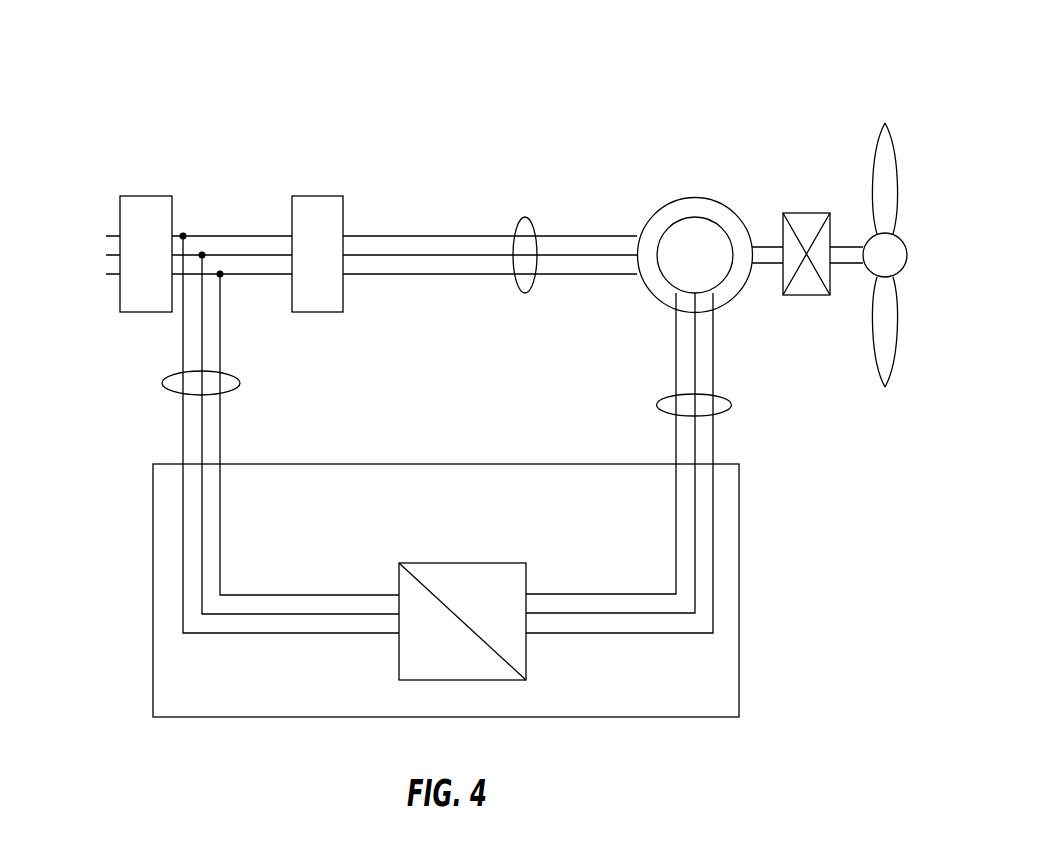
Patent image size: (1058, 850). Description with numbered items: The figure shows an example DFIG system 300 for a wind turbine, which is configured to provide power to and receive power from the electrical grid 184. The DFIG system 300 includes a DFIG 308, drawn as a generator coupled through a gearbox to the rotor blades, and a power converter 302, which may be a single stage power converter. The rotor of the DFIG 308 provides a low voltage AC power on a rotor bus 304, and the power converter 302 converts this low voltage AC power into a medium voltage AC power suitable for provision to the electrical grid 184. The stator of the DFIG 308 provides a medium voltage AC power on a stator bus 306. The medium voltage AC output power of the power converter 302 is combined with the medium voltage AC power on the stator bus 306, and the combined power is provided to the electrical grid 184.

The DFIG system 300 is at (753, 64).
The electrical grid 184 is at (83, 248).
The stator bus 306 is at (527, 217).
The DFIG 308 is at (690, 197).
The rotor bus 304 is at (731, 403).
The power converter 302 is at (740, 627).